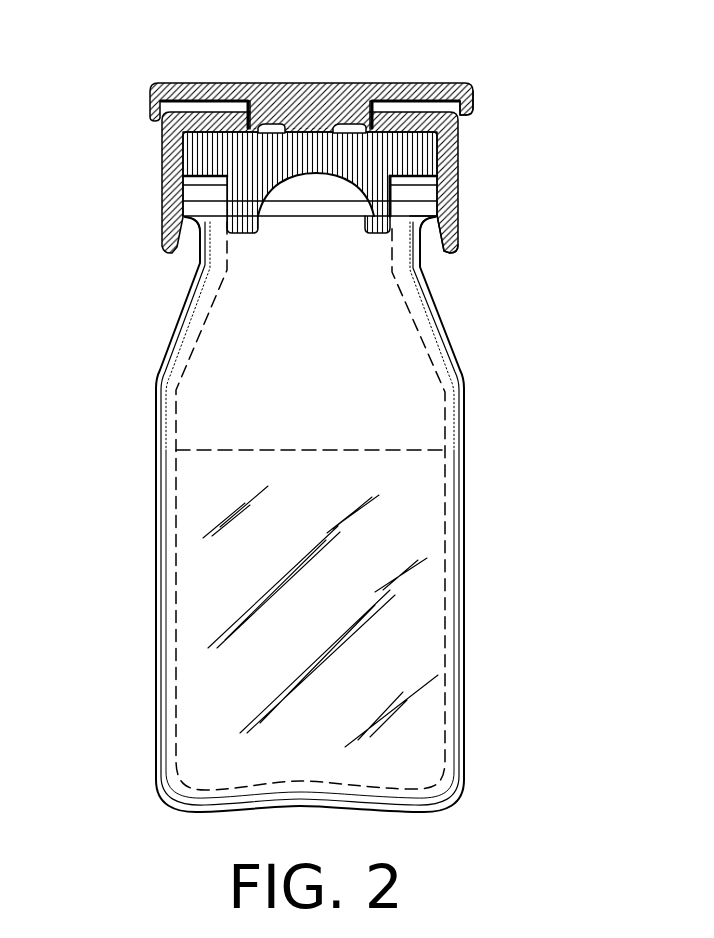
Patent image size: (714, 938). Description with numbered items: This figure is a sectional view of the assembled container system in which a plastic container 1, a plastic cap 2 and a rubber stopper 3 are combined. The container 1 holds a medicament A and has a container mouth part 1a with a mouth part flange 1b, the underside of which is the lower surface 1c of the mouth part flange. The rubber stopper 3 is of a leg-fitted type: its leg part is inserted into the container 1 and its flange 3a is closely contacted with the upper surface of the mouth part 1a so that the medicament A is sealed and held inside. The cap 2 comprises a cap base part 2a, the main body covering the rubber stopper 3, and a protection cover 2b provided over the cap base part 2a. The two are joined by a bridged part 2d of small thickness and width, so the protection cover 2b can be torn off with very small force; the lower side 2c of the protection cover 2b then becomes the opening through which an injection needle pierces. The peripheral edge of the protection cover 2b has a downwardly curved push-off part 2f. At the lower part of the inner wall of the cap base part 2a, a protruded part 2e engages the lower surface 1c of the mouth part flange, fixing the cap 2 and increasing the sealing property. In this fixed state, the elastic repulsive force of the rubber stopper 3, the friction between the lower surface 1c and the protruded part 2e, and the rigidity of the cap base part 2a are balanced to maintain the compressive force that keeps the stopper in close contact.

The plastic container 1 is at (482, 468).
The container mouth part 1a is at (305, 195).
The mouth part flange 1b is at (437, 188).
The lower surface of the mouth part flange 1c is at (430, 227).
The plastic cap 2 is at (490, 113).
The cap base part 2a is at (458, 143).
The protection cover 2b is at (302, 95).
The lower side of the protection cover 2c is at (323, 118).
The bridged part 2d is at (230, 123).
The protruded part 2e is at (458, 218).
The push-off part 2f is at (468, 84).
The rubber stopper 3 is at (225, 176).
The flange 3a is at (280, 152).
The medicament A is at (412, 602).